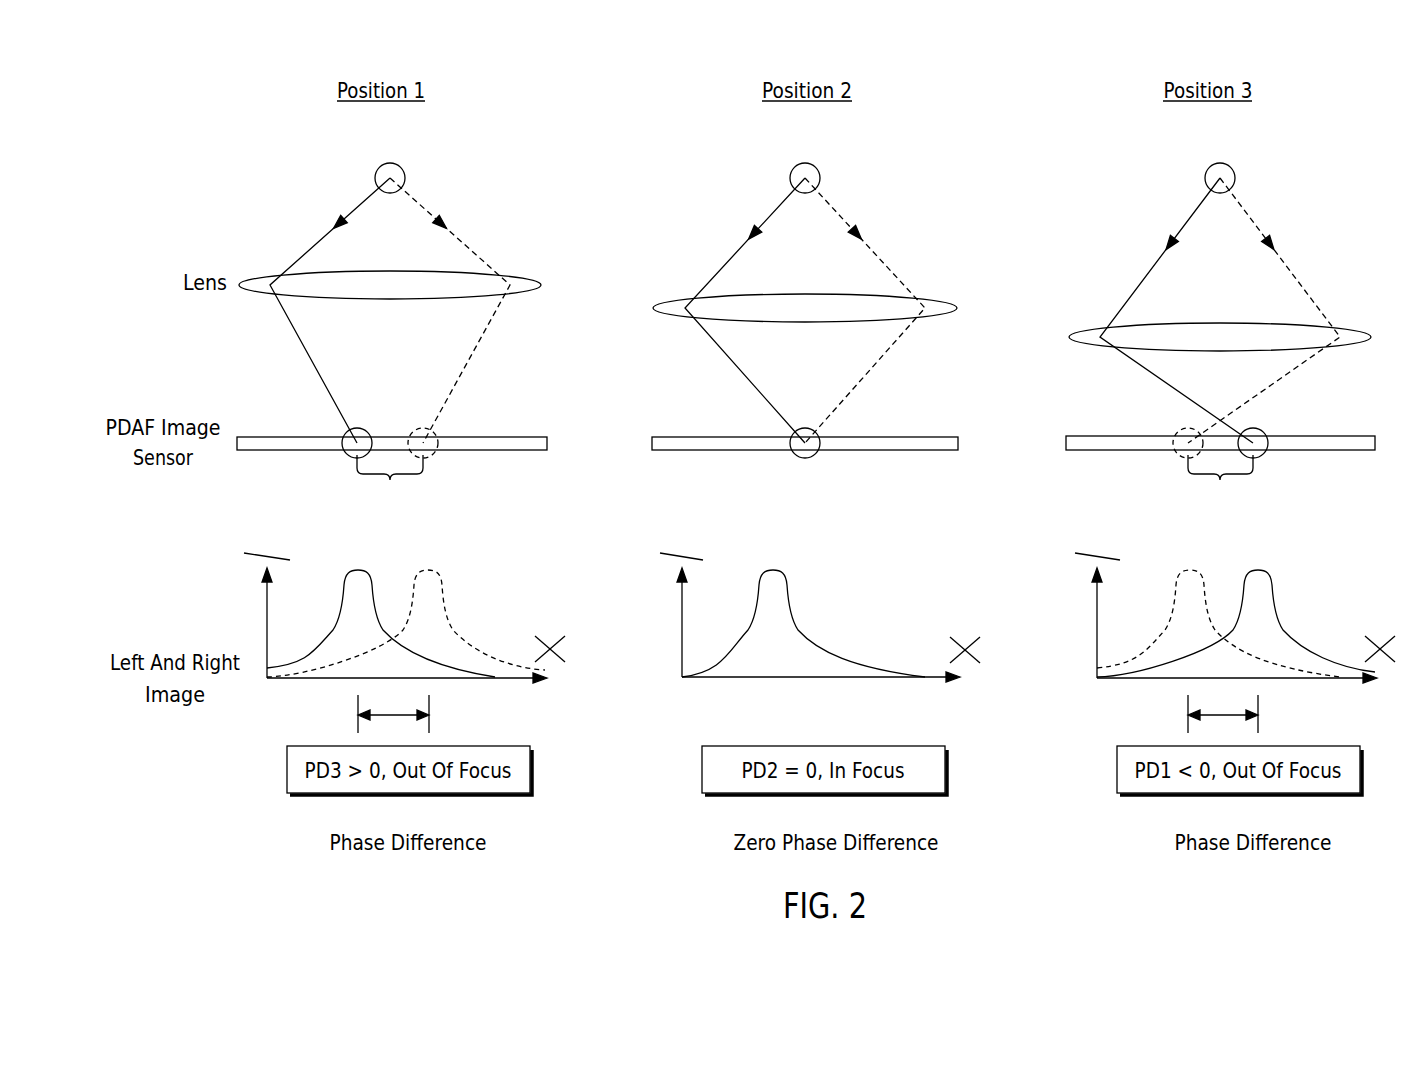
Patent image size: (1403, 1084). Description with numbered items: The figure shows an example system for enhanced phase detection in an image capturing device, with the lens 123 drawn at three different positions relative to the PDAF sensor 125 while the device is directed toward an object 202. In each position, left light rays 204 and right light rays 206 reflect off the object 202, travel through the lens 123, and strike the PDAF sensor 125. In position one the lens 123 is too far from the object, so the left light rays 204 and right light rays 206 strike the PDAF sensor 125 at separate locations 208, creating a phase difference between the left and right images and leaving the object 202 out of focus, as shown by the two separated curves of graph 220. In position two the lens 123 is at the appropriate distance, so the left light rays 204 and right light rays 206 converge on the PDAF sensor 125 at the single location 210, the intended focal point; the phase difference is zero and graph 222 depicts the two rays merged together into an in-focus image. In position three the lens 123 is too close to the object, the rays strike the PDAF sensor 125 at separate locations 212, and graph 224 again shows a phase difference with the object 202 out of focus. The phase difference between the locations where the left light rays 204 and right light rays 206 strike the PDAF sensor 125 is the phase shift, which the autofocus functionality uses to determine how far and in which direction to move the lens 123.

The object 202 is at (390, 163).
The left light rays 204 is at (318, 243).
The right light rays 206 is at (468, 240).
The lens 123 is at (390, 272).
The PDAF sensor 125 is at (500, 443).
The locations 208 is at (390, 480).
The location 210 is at (805, 458).
The locations 212 is at (1220, 480).
The graph 220 is at (493, 678).
The graph 222 is at (908, 678).
The graph 224 is at (1323, 678).